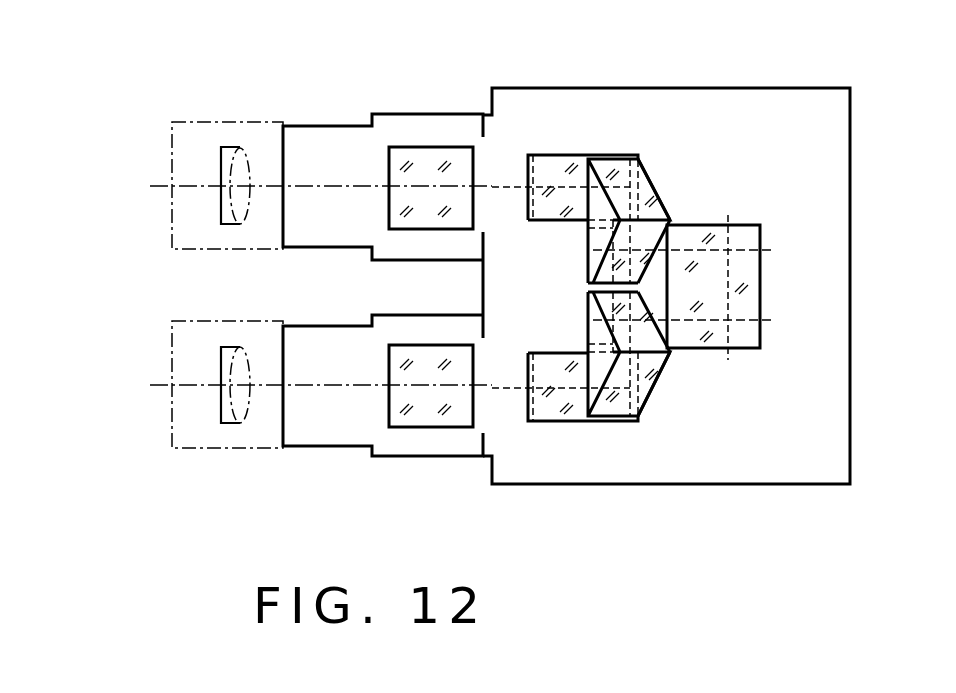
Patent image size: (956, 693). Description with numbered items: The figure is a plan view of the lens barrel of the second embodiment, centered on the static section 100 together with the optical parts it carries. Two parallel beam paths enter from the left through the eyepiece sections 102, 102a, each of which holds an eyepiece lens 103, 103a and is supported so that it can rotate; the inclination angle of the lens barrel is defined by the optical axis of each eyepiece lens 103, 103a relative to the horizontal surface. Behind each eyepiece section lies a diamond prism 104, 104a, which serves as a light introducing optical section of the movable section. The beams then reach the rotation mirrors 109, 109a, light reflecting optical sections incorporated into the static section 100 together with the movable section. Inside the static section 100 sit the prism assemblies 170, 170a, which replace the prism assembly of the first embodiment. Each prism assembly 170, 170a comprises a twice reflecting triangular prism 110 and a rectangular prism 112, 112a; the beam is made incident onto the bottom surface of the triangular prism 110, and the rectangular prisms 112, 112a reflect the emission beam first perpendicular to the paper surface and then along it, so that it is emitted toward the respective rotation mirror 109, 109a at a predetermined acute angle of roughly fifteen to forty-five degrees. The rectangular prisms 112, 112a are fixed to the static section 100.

The static section 100 is at (785, 108).
The eyepiece section 102 is at (325, 137).
The eyepiece section 102a is at (347, 437).
The eyepiece lens 103 is at (250, 153).
The eyepiece lens 103a is at (237, 427).
The diamond prism 104 is at (430, 163).
The diamond prism 104a is at (430, 415).
The rotation mirror 109 is at (548, 167).
The rotation mirror 109a is at (550, 413).
The twice reflecting triangular prism 110 is at (745, 270).
The rectangular prism 112 is at (622, 163).
The rectangular prism 112a is at (615, 410).
The prism assembly 170 is at (657, 196).
The prism assembly 170a is at (654, 384).